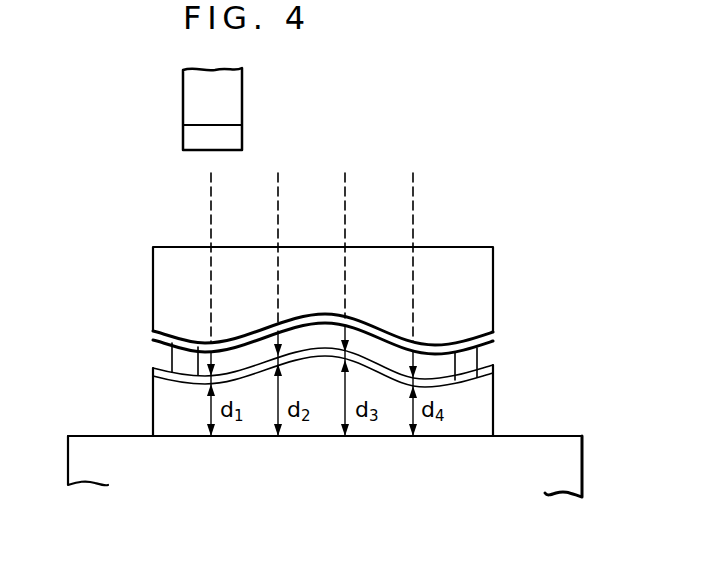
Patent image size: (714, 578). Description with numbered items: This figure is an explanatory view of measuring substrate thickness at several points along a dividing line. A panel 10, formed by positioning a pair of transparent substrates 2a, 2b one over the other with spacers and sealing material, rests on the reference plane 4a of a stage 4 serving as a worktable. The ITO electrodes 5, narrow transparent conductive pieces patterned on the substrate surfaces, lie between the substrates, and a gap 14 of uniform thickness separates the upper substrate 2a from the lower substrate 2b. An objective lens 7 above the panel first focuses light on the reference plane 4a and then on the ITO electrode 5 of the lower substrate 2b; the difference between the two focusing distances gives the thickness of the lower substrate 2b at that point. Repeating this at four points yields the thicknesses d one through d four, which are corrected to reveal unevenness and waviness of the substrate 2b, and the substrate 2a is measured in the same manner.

The objective lens 7 is at (230, 88).
The upper transparent substrate 2a is at (487, 310).
The lower transparent substrate 2b is at (487, 415).
The ITO electrode 5 is at (478, 378).
The gap 14 is at (228, 364).
The panel 10 is at (140, 322).
The stage 4 is at (558, 469).
The reference plane 4a is at (100, 436).